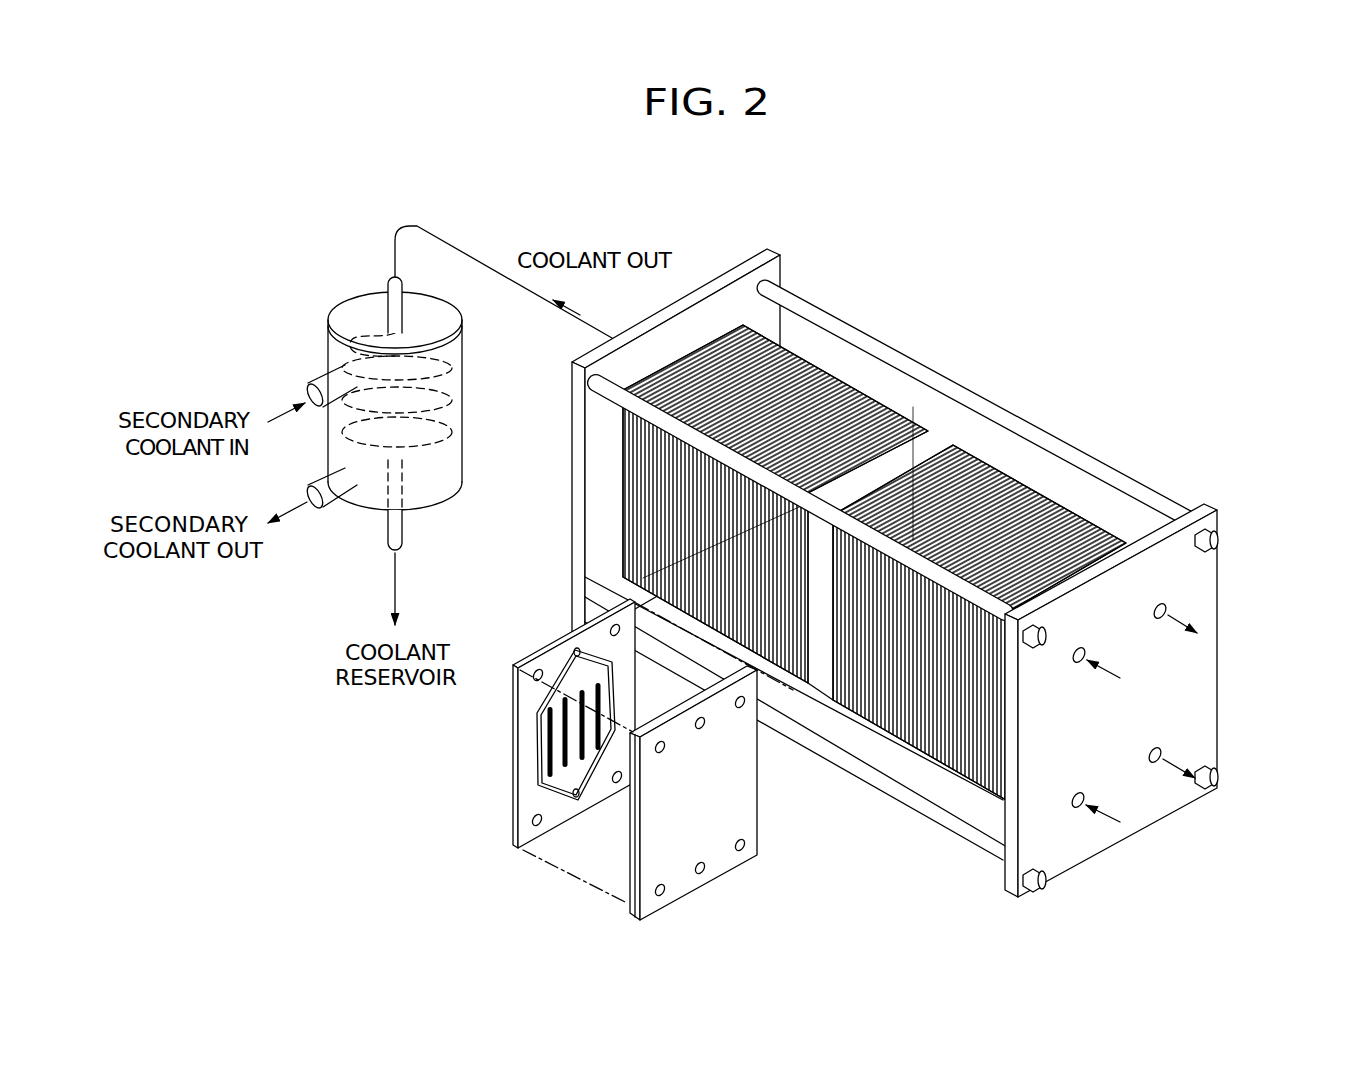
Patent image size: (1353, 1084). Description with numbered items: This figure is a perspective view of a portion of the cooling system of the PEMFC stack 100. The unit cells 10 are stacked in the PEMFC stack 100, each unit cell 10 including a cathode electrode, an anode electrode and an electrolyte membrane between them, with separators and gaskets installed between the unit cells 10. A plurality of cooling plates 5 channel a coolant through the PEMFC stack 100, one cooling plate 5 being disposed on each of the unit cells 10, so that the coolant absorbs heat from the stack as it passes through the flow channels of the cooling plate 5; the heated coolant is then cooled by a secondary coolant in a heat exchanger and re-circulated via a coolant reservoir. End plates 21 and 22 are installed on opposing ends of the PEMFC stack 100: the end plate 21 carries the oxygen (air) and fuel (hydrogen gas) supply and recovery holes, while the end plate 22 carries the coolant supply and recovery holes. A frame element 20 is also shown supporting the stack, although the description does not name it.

The PEMFC stack 100 is at (932, 549).
The cooling plate 5 is at (512, 758).
The unit cell 10 is at (738, 873).
The frame support rail 20 is at (850, 787).
The end plate 21 is at (1203, 688).
The end plate 22 is at (712, 280).